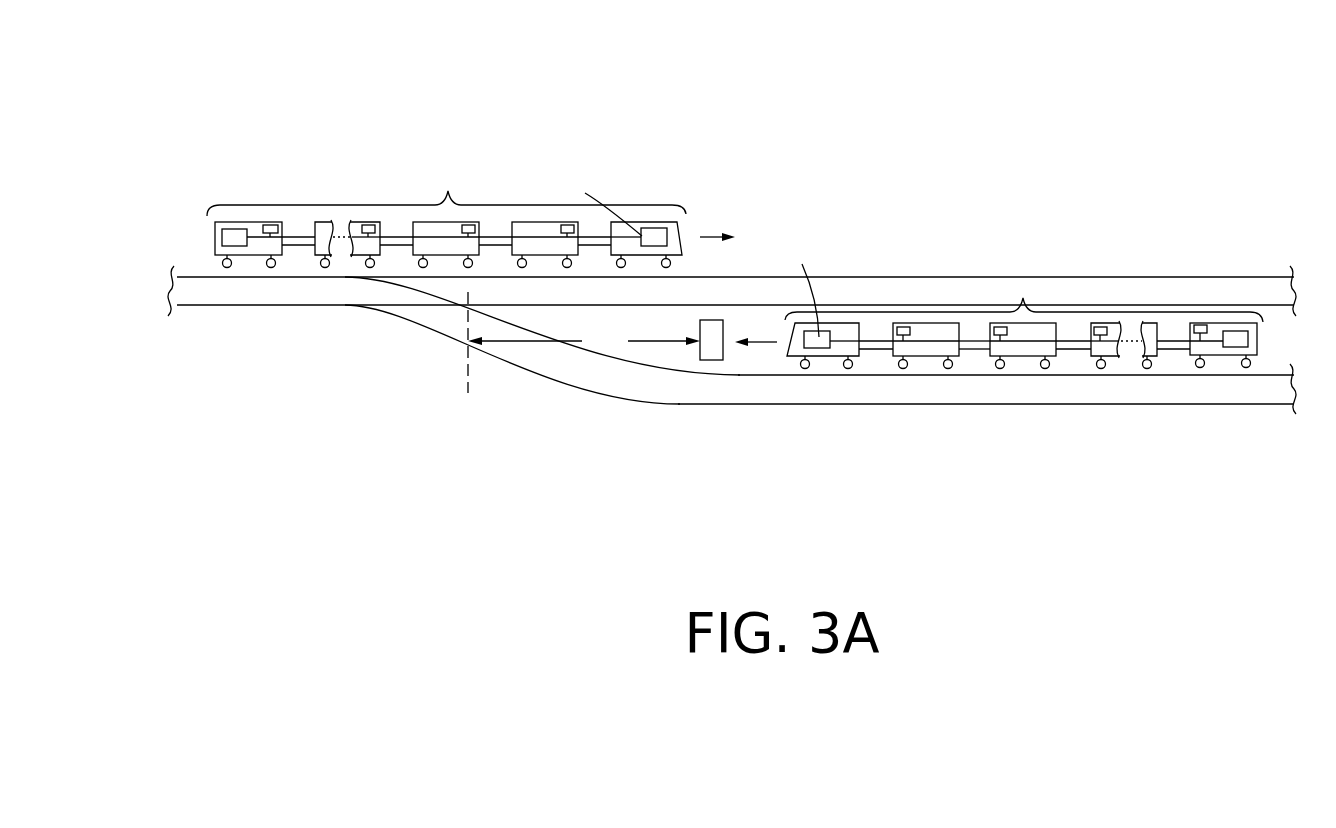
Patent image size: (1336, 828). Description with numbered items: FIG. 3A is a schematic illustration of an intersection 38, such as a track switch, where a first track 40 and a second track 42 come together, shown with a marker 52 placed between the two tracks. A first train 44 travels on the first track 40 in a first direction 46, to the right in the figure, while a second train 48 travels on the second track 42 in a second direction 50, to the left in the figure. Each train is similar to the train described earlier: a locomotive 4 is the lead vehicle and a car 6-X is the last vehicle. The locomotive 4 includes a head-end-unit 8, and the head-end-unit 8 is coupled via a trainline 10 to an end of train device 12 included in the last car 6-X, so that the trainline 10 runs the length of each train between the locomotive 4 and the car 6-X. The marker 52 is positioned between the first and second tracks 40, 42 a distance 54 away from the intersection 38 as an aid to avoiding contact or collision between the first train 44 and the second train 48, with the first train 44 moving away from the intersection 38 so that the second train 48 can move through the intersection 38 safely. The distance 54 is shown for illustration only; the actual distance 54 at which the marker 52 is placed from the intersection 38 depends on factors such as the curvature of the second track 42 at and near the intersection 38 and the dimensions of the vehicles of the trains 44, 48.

The locomotive 4 is at (630, 220).
The car 6-X is at (248, 221).
The head-end-unit (HEU) 8 is at (652, 228).
The trainline 10 is at (395, 237).
The end of train (EOT) device 12 is at (260, 318).
The intersection 38 is at (404, 351).
The first track 40 is at (883, 276).
The second track 42 is at (925, 406).
The first train 44 is at (446, 213).
The first direction 46 is at (700, 235).
The second train 48 is at (1023, 298).
The second direction 50 is at (763, 342).
The marker 52 is at (708, 362).
The distance 54 is at (584, 341).